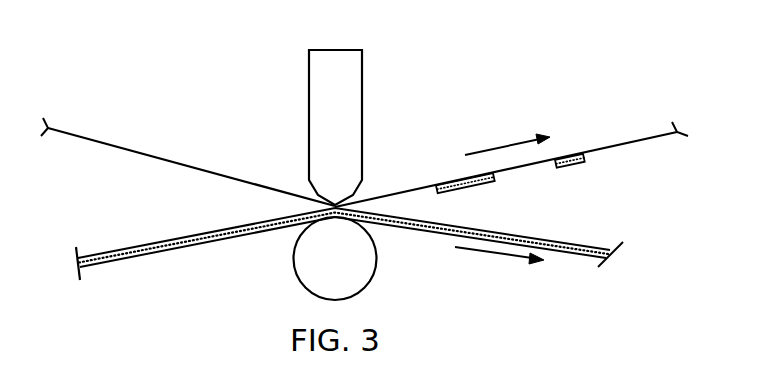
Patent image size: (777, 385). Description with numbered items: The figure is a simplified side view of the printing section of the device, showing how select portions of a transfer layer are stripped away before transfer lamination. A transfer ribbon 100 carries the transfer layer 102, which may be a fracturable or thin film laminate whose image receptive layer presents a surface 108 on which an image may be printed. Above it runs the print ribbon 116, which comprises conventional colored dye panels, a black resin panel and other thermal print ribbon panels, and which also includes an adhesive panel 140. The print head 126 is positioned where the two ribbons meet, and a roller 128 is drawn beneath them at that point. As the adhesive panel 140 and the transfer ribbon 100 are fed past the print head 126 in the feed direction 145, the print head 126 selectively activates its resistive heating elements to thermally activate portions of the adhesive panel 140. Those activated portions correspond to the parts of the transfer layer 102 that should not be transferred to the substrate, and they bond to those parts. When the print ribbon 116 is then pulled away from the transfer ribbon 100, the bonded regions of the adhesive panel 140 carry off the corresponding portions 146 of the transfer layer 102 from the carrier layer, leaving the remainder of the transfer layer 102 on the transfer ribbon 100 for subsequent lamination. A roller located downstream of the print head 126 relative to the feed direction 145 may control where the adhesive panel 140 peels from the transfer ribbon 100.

The transfer ribbon 100 is at (115, 263).
The transfer layer 102 is at (147, 250).
The surface 108 is at (587, 243).
The print ribbon 116 is at (116, 145).
The print head 126 is at (326, 60).
The roller 128 is at (303, 272).
The adhesive panel 140 is at (452, 182).
The feed direction 145 is at (508, 142).
The portions of the transfer layer 146 is at (466, 192).